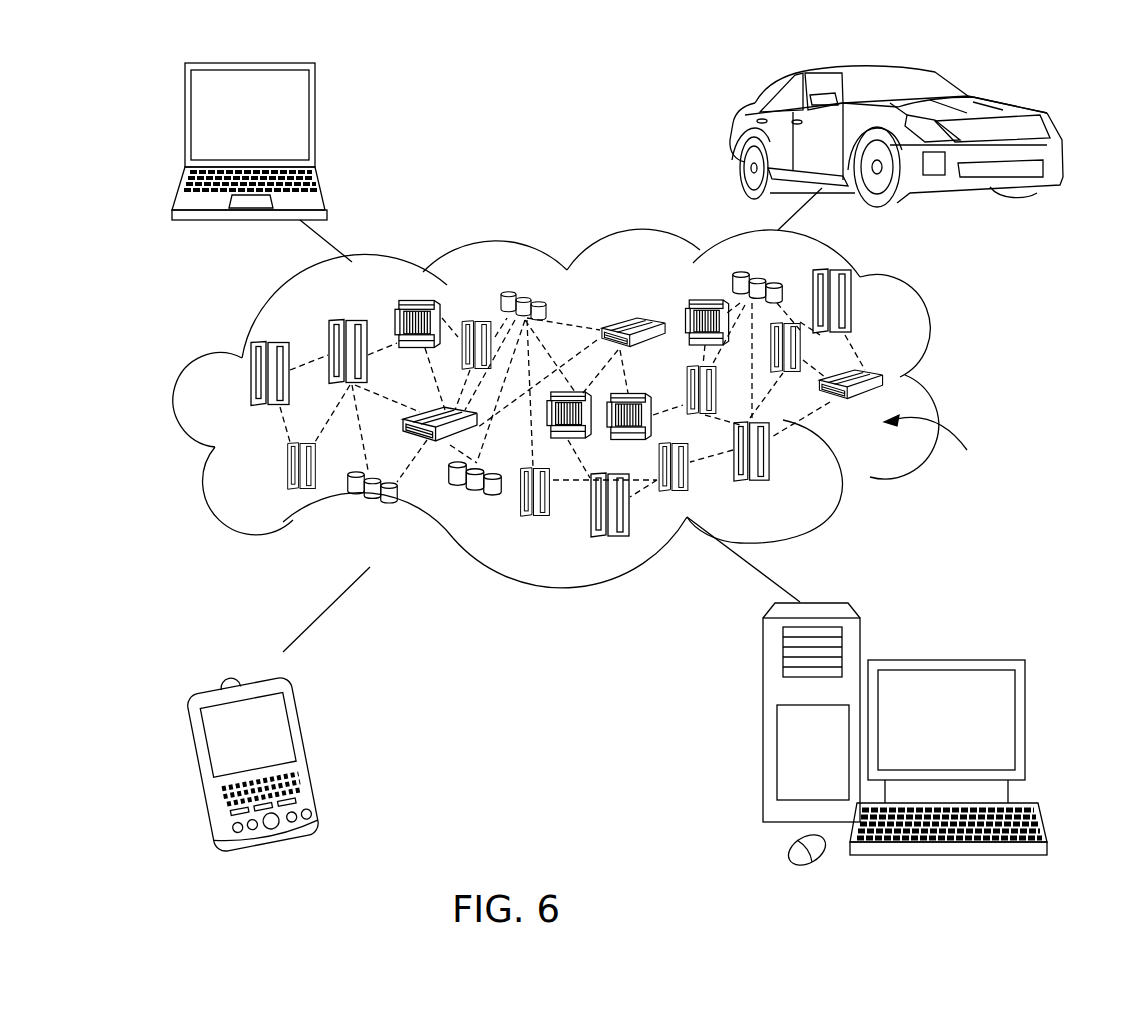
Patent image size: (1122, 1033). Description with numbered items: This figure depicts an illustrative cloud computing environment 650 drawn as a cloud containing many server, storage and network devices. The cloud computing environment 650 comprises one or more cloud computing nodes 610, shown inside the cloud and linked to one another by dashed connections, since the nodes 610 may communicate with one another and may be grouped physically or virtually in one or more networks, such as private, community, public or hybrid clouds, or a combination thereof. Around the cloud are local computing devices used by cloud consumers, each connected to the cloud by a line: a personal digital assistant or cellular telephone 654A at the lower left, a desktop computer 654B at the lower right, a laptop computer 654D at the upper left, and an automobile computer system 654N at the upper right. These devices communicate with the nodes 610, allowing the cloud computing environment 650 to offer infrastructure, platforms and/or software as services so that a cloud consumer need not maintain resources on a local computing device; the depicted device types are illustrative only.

The cloud computing environment 650 is at (950, 383).
The cloud computing nodes 610 is at (943, 449).
The laptop computer 654D is at (317, 122).
The automobile computer system 654N is at (732, 140).
The personal digital assistant (PDA) or cellular telephone 654A is at (308, 749).
The desktop computer 654B is at (945, 660).